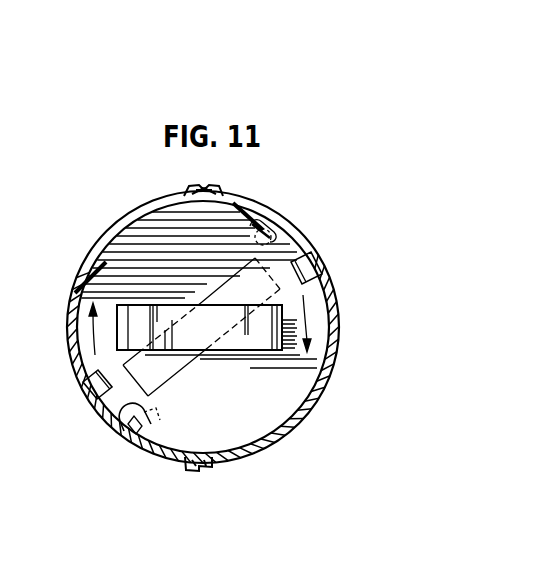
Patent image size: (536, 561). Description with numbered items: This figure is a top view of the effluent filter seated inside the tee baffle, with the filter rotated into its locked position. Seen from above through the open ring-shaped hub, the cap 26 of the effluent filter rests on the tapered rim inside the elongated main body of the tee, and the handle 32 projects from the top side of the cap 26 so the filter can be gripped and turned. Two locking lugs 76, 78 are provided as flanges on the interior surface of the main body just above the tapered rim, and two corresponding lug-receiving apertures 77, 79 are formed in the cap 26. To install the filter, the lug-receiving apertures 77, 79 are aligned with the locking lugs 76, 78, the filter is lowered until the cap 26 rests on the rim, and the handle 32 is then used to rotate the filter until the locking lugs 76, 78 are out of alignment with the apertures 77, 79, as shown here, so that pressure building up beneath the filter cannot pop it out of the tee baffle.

The cap 26 is at (148, 262).
The handle 32 is at (120, 300).
The locking lug 76 is at (112, 430).
The lug-receiving aperture 77 is at (87, 384).
The locking lug 78 is at (276, 232).
The lug-receiving aperture 79 is at (303, 263).